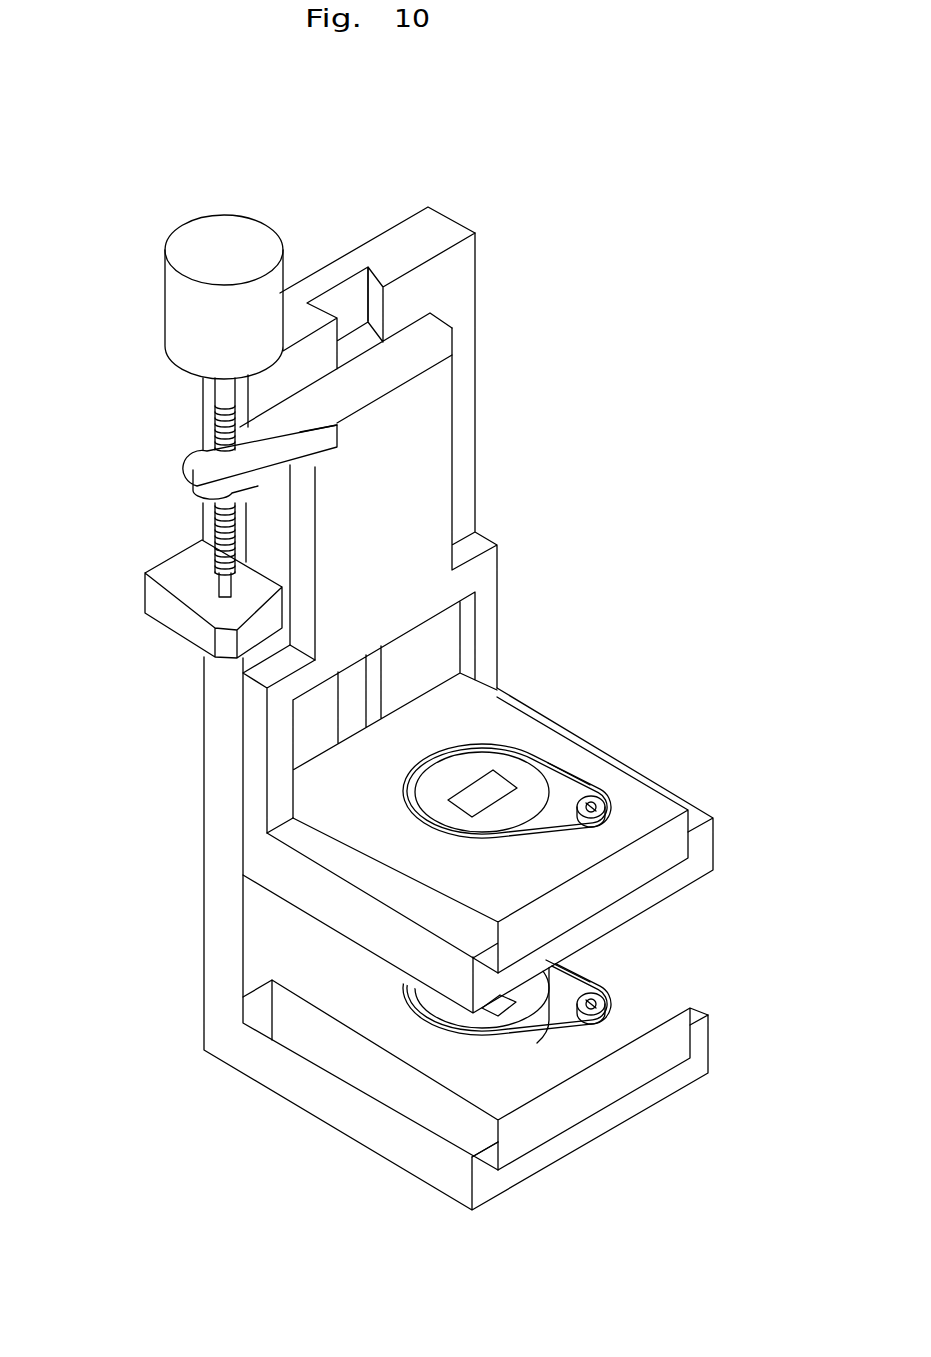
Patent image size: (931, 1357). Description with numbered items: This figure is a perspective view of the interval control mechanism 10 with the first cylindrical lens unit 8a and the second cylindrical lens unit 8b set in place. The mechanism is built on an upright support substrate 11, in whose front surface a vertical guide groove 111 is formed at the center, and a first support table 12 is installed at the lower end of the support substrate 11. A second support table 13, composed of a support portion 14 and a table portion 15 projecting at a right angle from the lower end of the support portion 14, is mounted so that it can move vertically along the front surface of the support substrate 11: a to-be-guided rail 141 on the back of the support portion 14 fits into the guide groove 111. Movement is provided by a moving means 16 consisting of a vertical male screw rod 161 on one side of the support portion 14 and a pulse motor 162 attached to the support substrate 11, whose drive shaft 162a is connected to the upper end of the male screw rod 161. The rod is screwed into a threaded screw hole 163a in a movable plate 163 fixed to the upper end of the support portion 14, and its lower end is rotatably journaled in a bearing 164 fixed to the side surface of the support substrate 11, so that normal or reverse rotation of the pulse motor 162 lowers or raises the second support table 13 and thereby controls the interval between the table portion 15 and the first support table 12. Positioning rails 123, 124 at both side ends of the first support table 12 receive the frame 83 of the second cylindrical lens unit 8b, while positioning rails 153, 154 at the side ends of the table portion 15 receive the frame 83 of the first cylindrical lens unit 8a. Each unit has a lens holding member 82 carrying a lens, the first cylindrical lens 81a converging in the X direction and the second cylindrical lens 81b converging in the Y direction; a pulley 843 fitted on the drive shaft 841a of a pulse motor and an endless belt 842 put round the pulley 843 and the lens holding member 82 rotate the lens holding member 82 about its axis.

The interval control mechanism 10 is at (368, 165).
The support substrate 11 is at (456, 216).
The guide groove 111 is at (370, 293).
The to-be-guided rail 141 is at (346, 343).
The support portion 14 is at (456, 412).
The second support table 13 is at (614, 494).
The first support table 12 is at (336, 1152).
The positioning rail 123 is at (704, 1030).
The positioning rail 124 is at (488, 1163).
The moving means 16 is at (156, 366).
The pulse motor 162 is at (178, 290).
The drive shaft 162a is at (217, 400).
The male screw rod 161 is at (226, 448).
The movable plate 163 is at (200, 485).
The threaded screw hole 163a is at (282, 464).
The bearing 164 is at (154, 575).
The table portion 15 is at (619, 755).
The positioning rail 153 is at (702, 803).
The positioning rail 154 is at (345, 868).
The first cylindrical lens unit 8a is at (548, 713).
The second cylindrical lens unit 8b is at (714, 950).
The lens holding member 82 is at (438, 790).
The first cylindrical lens 81a is at (476, 784).
The second cylindrical lens 81b is at (505, 1016).
The frame 83 is at (506, 722).
The endless belt 842 is at (561, 771).
The drive shaft 841a is at (606, 797).
The pulley 843 is at (604, 804).